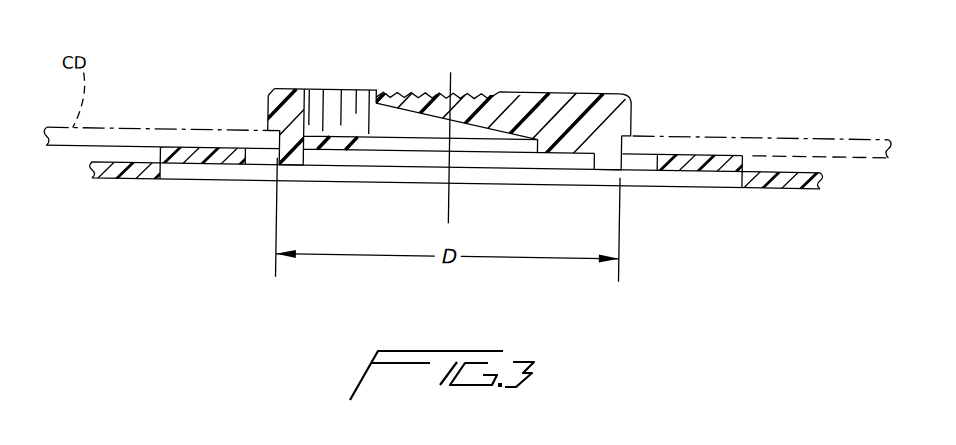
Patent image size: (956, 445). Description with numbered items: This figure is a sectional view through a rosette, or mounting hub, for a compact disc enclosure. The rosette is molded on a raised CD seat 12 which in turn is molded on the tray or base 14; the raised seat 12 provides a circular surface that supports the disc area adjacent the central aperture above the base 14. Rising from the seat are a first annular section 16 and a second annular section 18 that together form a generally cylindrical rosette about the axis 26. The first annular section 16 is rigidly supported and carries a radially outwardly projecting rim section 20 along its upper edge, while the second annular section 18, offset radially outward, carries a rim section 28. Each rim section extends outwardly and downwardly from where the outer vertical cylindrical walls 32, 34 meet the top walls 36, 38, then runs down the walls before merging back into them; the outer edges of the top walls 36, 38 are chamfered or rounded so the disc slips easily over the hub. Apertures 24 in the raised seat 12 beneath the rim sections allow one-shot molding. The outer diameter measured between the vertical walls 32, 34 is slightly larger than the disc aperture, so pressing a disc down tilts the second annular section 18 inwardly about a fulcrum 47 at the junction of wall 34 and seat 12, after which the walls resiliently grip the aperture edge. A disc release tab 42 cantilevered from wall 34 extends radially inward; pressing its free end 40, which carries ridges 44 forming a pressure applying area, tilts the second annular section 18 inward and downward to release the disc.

The raised CD seat 12 is at (763, 178).
The tray or base 14 is at (130, 178).
The first annular section 16 is at (298, 87).
The second annular section 18 is at (600, 93).
The rim section 20 is at (267, 107).
The aperture 24 is at (258, 161).
The axis 26 is at (452, 199).
The rim section 28 is at (633, 97).
The outer vertical cylindrical wall 32 is at (278, 137).
The outer vertical cylindrical wall 34 is at (632, 131).
The top wall 36 is at (290, 85).
The top wall 38 is at (618, 84).
The free end 40 is at (415, 84).
The disc release tab 42 is at (487, 84).
The ridges 44 is at (398, 86).
The fulcrum 47 is at (607, 160).